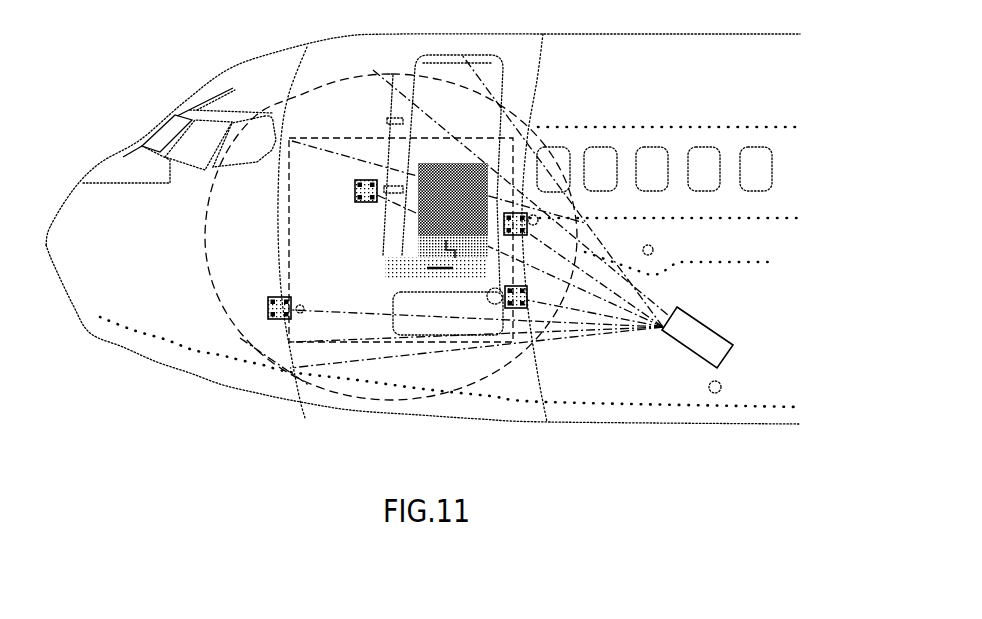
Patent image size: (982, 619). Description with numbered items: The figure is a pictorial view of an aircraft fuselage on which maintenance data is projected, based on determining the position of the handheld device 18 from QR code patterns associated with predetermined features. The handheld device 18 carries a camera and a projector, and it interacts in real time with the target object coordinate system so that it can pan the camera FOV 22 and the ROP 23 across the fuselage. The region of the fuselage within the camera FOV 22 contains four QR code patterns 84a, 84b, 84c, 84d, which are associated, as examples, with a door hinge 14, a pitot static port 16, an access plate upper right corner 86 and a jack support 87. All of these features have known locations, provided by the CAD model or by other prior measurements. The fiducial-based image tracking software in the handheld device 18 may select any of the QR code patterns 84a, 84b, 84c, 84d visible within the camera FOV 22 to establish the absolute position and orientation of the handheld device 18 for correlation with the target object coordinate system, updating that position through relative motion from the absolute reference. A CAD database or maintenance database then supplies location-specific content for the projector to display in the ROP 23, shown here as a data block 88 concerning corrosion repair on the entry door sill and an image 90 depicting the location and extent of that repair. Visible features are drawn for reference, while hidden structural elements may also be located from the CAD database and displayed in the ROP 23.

The door hinge 14 is at (385, 190).
The pitot static port 16 is at (304, 310).
The handheld device 18 is at (677, 347).
The camera FOV 22 is at (478, 90).
The ROP 23 is at (375, 137).
The QR code pattern 84a is at (355, 191).
The QR code pattern 84b is at (282, 320).
The QR code pattern 84c is at (508, 306).
The QR code pattern 84d is at (520, 213).
The access plate upper right corner 86 is at (488, 298).
The jack support 87 is at (534, 228).
The data block 88 is at (453, 162).
The image 90 is at (388, 285).